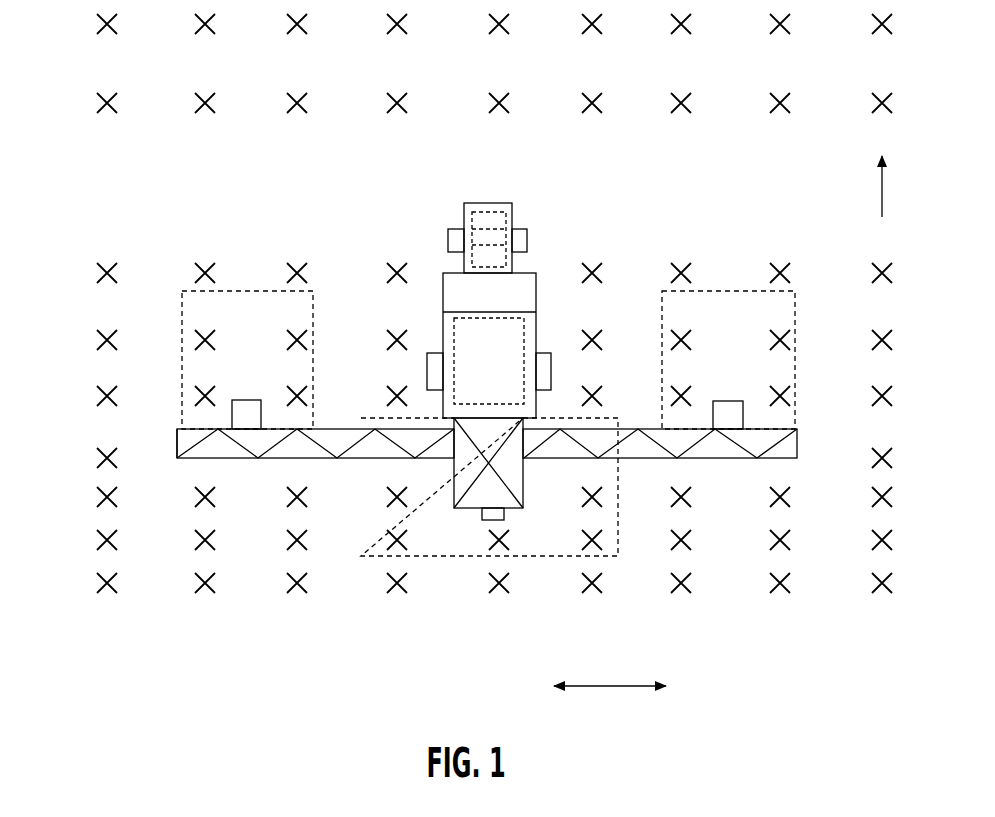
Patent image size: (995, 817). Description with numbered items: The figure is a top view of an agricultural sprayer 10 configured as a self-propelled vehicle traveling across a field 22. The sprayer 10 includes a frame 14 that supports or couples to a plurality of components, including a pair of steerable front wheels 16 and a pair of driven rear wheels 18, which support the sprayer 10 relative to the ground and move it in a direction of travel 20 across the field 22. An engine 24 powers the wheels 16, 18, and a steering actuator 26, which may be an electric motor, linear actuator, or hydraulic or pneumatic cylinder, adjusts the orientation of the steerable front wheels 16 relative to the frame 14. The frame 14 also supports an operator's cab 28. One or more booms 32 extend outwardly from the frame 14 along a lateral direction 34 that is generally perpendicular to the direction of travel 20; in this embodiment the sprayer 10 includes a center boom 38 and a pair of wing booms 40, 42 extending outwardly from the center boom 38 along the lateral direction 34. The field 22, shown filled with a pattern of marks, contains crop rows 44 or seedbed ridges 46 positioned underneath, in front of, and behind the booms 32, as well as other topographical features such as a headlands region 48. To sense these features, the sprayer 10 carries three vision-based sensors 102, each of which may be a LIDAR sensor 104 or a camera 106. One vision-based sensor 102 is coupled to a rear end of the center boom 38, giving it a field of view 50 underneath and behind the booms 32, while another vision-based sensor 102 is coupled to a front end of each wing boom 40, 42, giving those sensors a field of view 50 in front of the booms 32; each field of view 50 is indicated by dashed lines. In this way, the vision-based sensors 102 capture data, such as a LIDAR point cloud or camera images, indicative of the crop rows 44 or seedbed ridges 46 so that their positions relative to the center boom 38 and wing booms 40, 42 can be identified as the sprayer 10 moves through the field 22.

The agricultural sprayer 10 is at (497, 333).
The frame 14 is at (479, 316).
The steerable front wheels 16 is at (448, 240).
The driven rear wheels 18 is at (427, 380).
The direction of travel 20 is at (882, 195).
The field 22 is at (449, 356).
The engine 24 is at (465, 258).
The steering actuator 26 is at (456, 204).
The operator's cab 28 is at (532, 273).
The booms 32 is at (709, 468).
The lateral direction 34 is at (605, 688).
The center boom 38 is at (451, 487).
The wing boom 40 is at (177, 448).
The wing boom 42 is at (497, 458).
The crop rows 44 is at (449, 356).
The seedbed ridges 46 is at (110, 637).
The headlands region 48 is at (775, 180).
The field of view 50 is at (242, 283).
The vision-based sensor 102 is at (490, 466).
The LIDAR sensor 104 is at (484, 466).
The camera 106 is at (263, 418).